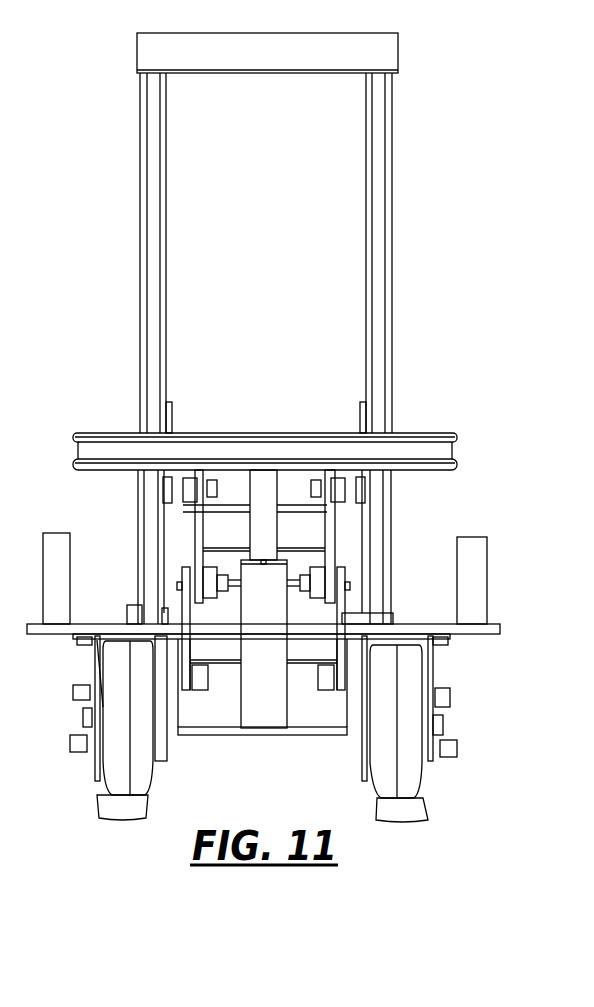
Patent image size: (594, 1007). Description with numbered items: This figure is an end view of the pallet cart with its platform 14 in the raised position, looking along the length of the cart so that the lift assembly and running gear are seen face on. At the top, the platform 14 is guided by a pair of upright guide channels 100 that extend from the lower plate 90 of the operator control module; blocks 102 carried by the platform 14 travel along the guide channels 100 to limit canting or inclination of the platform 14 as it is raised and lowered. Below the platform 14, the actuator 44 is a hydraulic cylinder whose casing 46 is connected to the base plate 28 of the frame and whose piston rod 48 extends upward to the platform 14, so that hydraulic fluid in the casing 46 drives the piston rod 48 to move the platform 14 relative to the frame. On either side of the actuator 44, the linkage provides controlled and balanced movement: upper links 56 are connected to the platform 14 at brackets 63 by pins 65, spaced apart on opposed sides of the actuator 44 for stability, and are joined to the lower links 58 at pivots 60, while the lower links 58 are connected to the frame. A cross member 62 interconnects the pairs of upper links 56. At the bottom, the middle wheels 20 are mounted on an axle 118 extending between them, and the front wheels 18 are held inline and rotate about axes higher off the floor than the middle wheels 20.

The platform 14 is at (462, 433).
The front wheels 18 is at (152, 786).
The middle wheels 20 is at (98, 796).
The base plate 28 is at (191, 737).
The actuator 44 is at (295, 740).
The casing 46 is at (268, 723).
The piston rod 48 is at (268, 477).
The upper links 56 is at (202, 513).
The lower links 58 is at (187, 607).
The pivots 60 is at (350, 586).
The cross member 62 is at (220, 642).
The brackets 63 is at (173, 496).
The pins 65 is at (213, 487).
The lower plate 90 is at (498, 630).
The guide channels 100 is at (140, 120).
The blocks 102 is at (168, 406).
The axle 118 is at (451, 697).